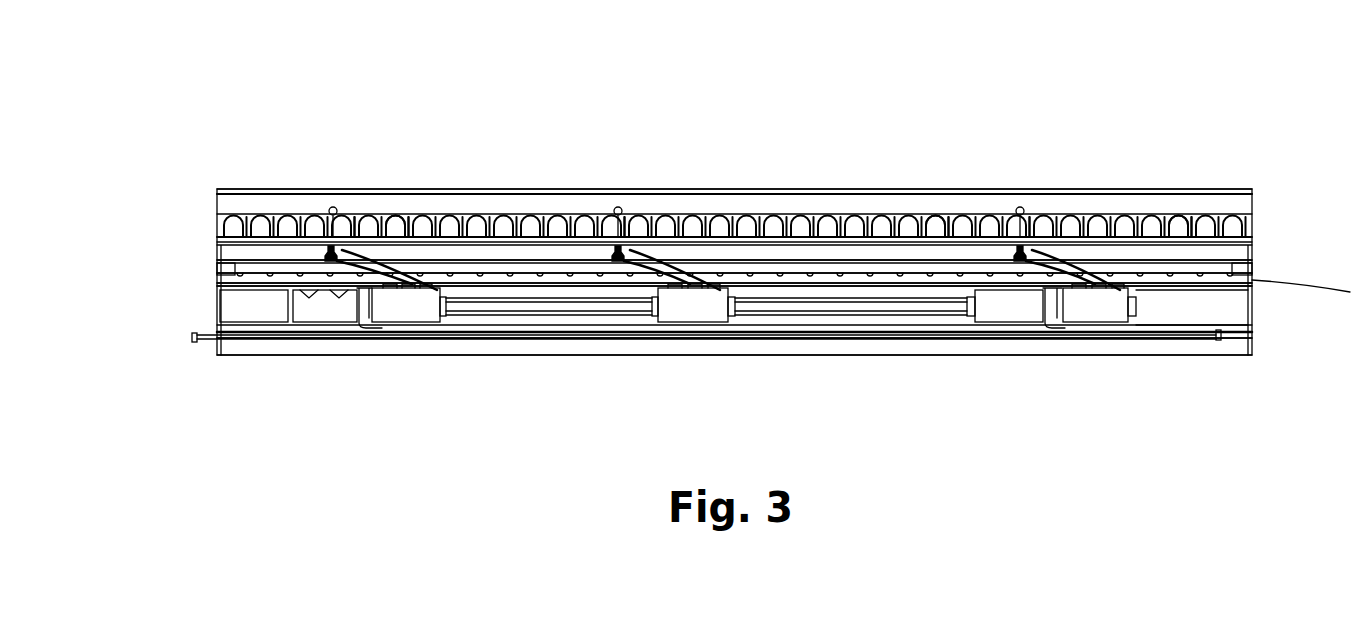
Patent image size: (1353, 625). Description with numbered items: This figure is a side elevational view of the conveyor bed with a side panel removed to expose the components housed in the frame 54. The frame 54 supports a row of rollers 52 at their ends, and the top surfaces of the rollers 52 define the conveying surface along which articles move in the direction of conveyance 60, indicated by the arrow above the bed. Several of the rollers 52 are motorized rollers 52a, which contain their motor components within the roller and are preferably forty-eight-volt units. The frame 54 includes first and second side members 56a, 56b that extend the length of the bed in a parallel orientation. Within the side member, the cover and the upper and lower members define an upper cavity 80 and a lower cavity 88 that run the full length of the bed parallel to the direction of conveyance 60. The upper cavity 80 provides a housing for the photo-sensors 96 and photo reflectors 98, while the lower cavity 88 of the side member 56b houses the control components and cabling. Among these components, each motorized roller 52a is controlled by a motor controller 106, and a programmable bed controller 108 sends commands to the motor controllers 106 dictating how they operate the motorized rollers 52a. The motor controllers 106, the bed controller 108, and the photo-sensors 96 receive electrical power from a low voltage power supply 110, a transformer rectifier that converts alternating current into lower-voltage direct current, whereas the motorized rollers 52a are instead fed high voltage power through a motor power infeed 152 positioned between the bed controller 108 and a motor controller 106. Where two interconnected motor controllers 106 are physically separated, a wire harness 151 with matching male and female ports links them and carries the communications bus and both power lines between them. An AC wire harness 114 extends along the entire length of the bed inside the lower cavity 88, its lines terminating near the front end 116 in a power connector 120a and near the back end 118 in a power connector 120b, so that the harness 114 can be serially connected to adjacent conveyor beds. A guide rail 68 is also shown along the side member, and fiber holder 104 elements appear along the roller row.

The rollers 52 is at (893, 215).
The motorized rollers 52a is at (362, 215).
The frame 54 is at (240, 192).
The first side member 56a is at (523, 190).
The second side member 56b is at (282, 350).
The direction of conveyance 60 is at (755, 72).
The guide rail 68 is at (218, 258).
The upper cavity 80 is at (1200, 248).
The lower cavity 88 is at (1165, 298).
The photo-sensors 96 is at (325, 250).
The photo reflectors 98 is at (335, 205).
The fiber holder 104 is at (395, 215).
The motor controller 106 is at (418, 315).
The bed controller 108 is at (318, 312).
The low voltage power supply 110 is at (233, 312).
The AC wire harness 114 is at (743, 342).
The front end 116 is at (288, 427).
The back end 118 is at (1200, 440).
The power connector 120a is at (192, 338).
The power connector 120b is at (1222, 340).
The wire harness 151 is at (560, 312).
The motor power infeed 152 is at (365, 312).